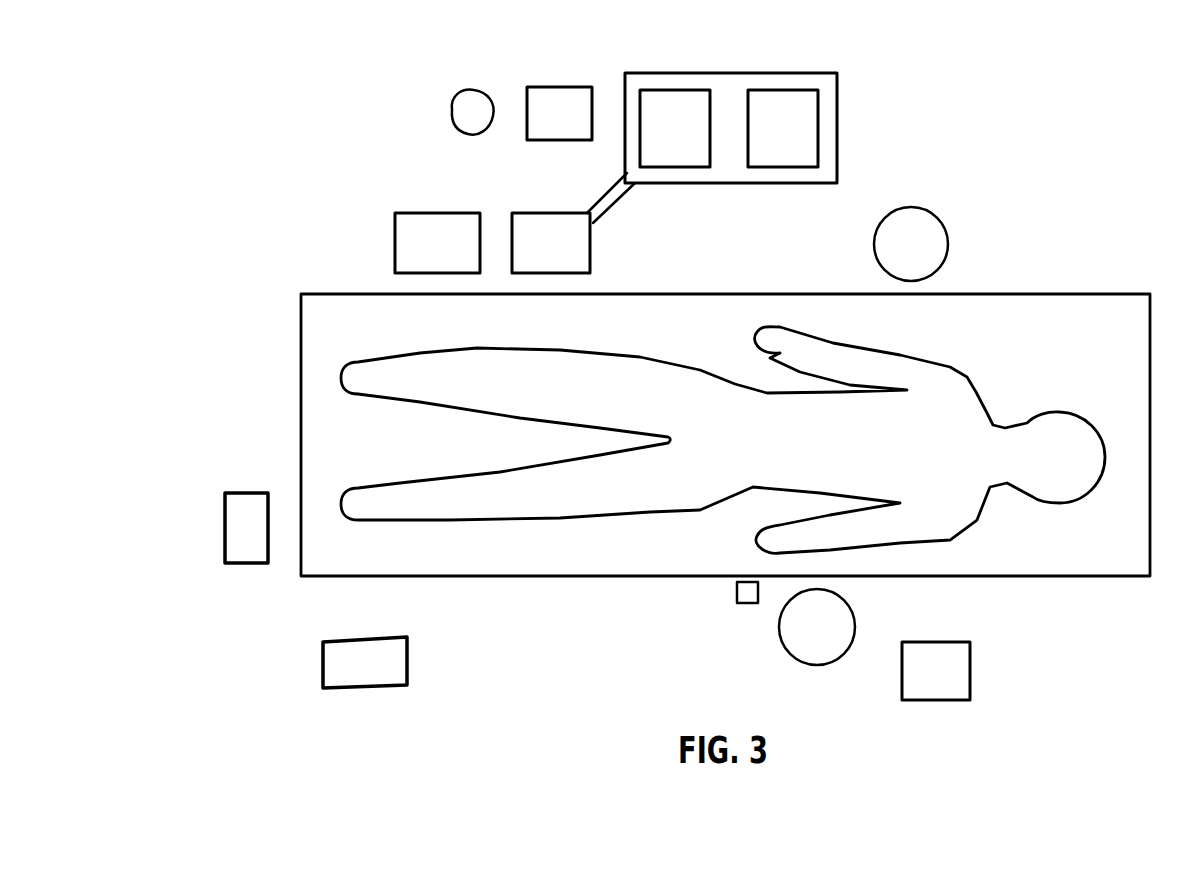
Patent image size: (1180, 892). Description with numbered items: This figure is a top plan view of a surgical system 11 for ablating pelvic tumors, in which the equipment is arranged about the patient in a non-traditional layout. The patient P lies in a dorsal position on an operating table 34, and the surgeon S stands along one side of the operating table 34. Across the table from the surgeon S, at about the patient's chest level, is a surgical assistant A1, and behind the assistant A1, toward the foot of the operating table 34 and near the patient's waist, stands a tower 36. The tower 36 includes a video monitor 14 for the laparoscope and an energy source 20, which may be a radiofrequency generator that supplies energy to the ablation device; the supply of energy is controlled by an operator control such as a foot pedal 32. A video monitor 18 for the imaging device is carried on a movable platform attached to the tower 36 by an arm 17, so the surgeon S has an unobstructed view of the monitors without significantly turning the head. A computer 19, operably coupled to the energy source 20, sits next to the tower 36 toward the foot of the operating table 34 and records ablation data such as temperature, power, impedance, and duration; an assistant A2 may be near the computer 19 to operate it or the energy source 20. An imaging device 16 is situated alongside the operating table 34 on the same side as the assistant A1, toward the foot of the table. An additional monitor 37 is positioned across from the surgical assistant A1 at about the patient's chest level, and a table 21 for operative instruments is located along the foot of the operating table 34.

The surgical system 11 is at (1104, 124).
The video monitor 14 is at (793, 90).
The imaging device 16 is at (440, 213).
The arm 17 is at (615, 210).
The video monitor 18 is at (533, 213).
The computer 19 is at (557, 87).
The energy source 20 is at (677, 90).
The table for operative instruments 21 is at (225, 532).
The foot pedal 32 is at (733, 588).
The operating table 34 is at (1120, 557).
The tower 36 is at (837, 132).
The additional monitor 37 is at (935, 700).
The surgical assistant A1 is at (948, 248).
The assistant A2 is at (452, 110).
The patient P is at (900, 543).
The surgeon S is at (828, 665).